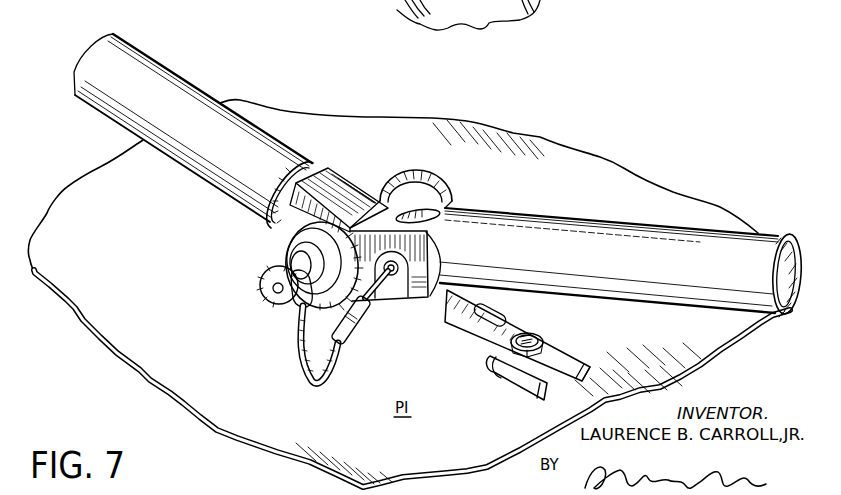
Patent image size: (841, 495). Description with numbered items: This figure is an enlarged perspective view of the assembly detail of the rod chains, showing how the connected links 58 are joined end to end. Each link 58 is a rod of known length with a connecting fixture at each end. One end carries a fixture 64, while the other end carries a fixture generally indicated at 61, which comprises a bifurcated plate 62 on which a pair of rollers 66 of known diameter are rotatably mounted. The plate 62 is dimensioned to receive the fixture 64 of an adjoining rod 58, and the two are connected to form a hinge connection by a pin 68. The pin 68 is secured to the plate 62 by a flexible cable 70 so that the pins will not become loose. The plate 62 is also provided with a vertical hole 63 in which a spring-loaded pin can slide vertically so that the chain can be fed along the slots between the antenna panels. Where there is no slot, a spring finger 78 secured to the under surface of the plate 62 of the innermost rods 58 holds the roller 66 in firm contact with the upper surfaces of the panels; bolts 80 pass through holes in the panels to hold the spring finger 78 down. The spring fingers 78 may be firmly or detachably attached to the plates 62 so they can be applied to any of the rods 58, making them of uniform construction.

The link 58 is at (165, 90).
The fixture 61 is at (462, 184).
The bifurcated plate 62 is at (421, 263).
The vertical hole 63 is at (440, 212).
The fixture 64 is at (347, 190).
The roller 66 is at (410, 184).
The pin 68 is at (260, 288).
The flexible cable 70 is at (333, 364).
The spring finger 78 is at (483, 339).
The bolt 80 is at (535, 339).